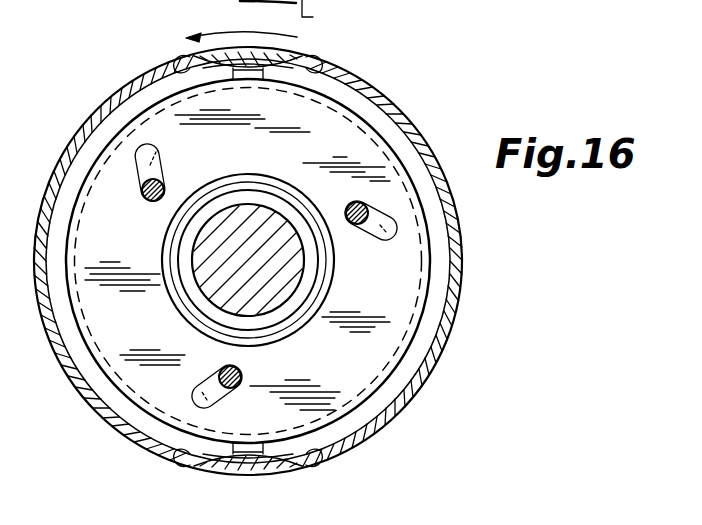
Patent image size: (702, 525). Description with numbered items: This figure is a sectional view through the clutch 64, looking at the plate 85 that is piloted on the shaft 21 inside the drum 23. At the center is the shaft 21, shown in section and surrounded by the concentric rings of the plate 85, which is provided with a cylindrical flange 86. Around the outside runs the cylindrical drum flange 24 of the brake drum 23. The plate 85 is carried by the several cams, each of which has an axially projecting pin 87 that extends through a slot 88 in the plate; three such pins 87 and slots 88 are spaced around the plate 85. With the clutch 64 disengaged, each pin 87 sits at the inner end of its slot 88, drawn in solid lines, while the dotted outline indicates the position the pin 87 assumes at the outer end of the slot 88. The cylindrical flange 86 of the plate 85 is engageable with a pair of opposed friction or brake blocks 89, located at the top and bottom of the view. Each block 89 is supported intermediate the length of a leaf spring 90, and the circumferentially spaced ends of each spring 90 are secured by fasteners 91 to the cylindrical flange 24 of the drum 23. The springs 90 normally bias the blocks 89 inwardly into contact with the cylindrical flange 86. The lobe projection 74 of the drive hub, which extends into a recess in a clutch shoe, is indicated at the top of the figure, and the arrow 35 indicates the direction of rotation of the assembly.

The shaft 21 is at (257, 222).
The drum 23 is at (386, 88).
The cylindrical drum flange 24 is at (414, 130).
The direction of rotation 35 is at (217, 32).
The clutch 64 is at (66, 125).
The lobe projection 74 is at (292, 12).
The plate 85 is at (384, 287).
The cylindrical flange 86 is at (432, 244).
The pin 87 is at (153, 144).
The slot 88 is at (160, 168).
The friction or brake block 89 is at (266, 76).
The leaf spring 90 is at (222, 72).
The fastener 91 is at (180, 62).